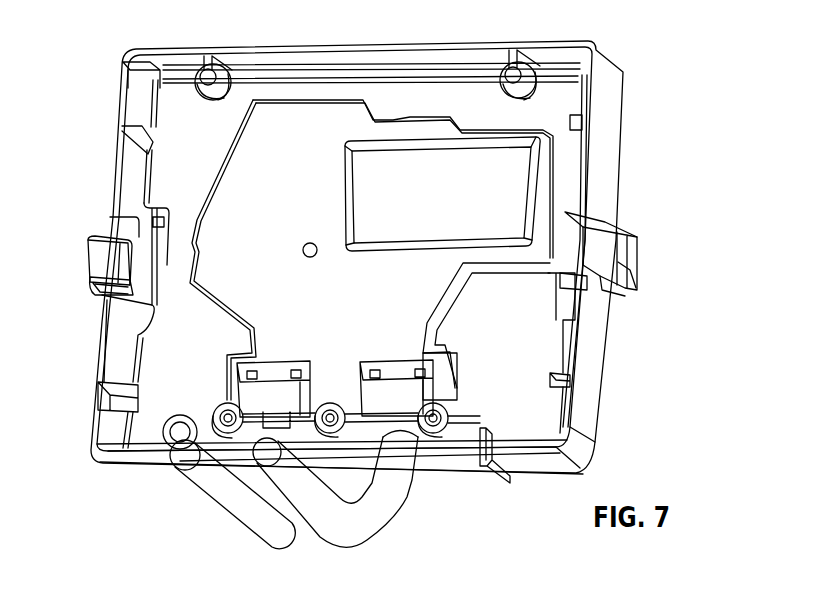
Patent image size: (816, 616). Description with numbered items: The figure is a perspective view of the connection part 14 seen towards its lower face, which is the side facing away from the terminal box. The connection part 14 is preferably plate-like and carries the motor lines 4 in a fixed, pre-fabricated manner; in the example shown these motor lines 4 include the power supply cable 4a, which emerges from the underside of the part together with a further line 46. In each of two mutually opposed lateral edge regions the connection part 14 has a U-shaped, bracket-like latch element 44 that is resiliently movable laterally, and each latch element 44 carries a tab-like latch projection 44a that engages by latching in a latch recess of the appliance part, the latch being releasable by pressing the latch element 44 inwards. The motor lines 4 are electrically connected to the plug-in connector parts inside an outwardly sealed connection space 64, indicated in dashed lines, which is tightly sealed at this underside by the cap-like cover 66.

The connection part 14 is at (625, 65).
The latch element 44 is at (612, 242).
The latch projection 44a is at (623, 260).
The cover 66 is at (262, 266).
The connection space 64 is at (393, 288).
The hose 46 is at (230, 498).
The power supply cable 4a is at (370, 513).
The motor lines 4 is at (295, 508).